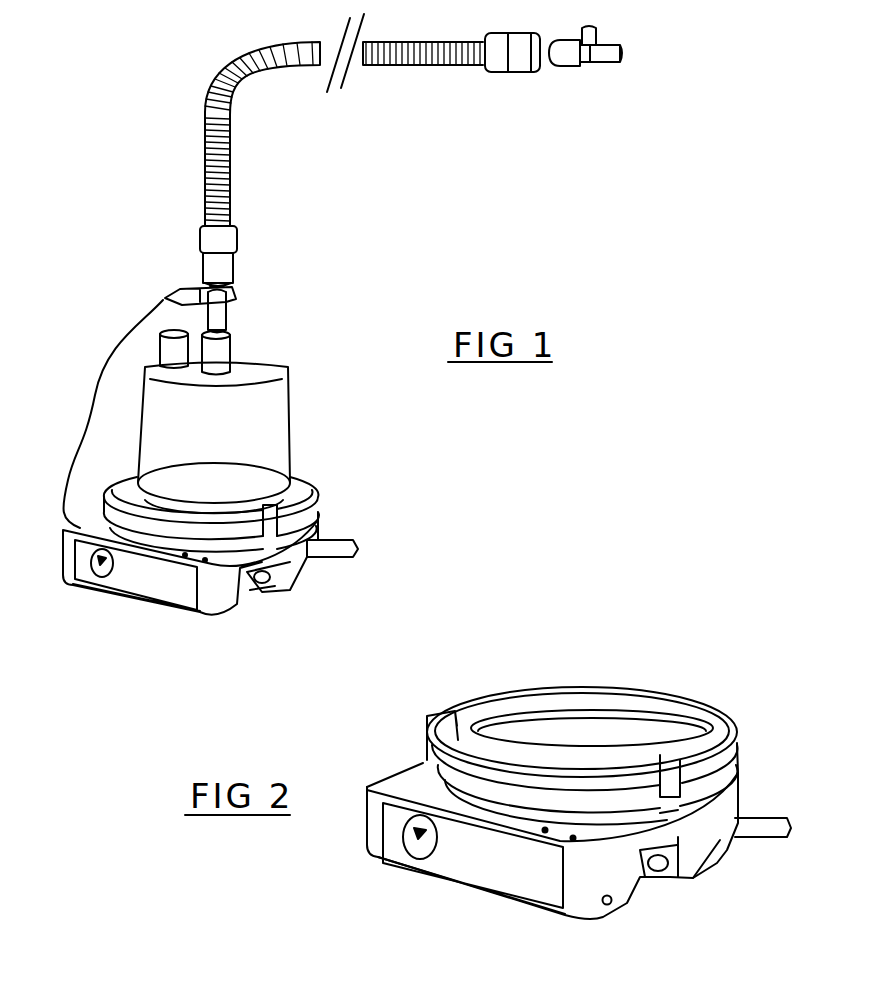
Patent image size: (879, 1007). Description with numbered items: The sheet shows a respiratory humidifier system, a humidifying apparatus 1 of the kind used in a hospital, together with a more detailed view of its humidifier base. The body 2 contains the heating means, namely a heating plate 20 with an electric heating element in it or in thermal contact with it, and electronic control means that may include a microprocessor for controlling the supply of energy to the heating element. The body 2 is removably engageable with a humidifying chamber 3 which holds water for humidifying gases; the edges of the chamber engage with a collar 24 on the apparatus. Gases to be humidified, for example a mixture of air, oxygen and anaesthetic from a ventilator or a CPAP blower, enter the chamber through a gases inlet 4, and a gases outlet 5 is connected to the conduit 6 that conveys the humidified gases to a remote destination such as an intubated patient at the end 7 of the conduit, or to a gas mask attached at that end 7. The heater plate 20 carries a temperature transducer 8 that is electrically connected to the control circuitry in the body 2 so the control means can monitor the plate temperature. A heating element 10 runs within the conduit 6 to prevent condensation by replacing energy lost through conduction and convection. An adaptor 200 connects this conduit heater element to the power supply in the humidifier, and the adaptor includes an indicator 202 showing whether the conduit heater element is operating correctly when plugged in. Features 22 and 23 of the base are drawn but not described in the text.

In FIG. 1, the humidifying apparatus 1 is at (103, 660).
In FIG. 1, the body 2 is at (243, 610).
In FIG. 2, the body 2 is at (717, 867).
In FIG. 1, the humidifying chamber 3 is at (288, 423).
In FIG. 1, the gases inlet 4 is at (158, 337).
In FIG. 1, the gases outlet 5 is at (235, 333).
In FIG. 1, the conduit 6 is at (275, 45).
In FIG. 1, the end of the conduit 7 is at (620, 66).
In FIG. 1, the temperature transducer 8 is at (118, 494).
In FIG. 1, the heating element 10 is at (418, 65).
In FIG. 1, the heating plate 20 is at (240, 485).
In FIG. 2, the heating plate 20 is at (514, 728).
In FIG. 2, the base side wall 22 is at (738, 783).
In FIG. 2, the indicator button 23 is at (613, 903).
In FIG. 2, the collar 24 is at (703, 710).
In FIG. 1, the adaptor 200 is at (165, 300).
In FIG. 1, the indicator 202 is at (180, 287).